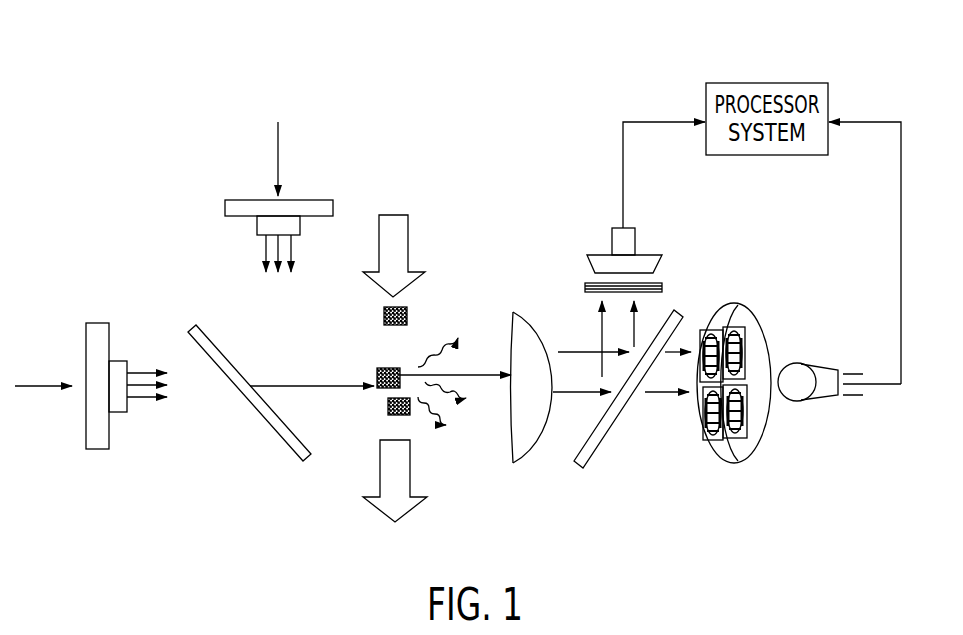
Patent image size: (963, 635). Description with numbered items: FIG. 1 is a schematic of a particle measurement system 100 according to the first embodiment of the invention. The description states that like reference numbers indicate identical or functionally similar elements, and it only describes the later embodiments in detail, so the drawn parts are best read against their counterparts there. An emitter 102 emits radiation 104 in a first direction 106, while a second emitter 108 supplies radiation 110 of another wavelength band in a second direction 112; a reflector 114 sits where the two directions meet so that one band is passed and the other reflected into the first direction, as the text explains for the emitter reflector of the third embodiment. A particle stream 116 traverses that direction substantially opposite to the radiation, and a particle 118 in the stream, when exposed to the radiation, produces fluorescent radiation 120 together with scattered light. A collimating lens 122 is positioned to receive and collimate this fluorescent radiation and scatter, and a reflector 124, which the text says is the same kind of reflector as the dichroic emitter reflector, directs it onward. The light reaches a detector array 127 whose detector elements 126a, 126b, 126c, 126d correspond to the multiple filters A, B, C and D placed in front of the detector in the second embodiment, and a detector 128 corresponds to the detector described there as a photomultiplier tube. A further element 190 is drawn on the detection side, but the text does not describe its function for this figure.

The optical system 100 is at (416, 90).
The light source 102 is at (98, 451).
The light beams 104 is at (143, 401).
The input signal 106 is at (72, 392).
The sample delivery device 108 is at (248, 206).
The sample stream 110 is at (265, 248).
The sample input 112 is at (273, 135).
The mirror 114 is at (307, 459).
The sheath flow 116 is at (394, 213).
The particles 118 is at (408, 311).
The scattered light 120 is at (459, 373).
The collection lens 122 is at (525, 442).
The reflector 124 is at (593, 468).
The detector element 126a is at (734, 328).
The detector element 126b is at (712, 331).
The detector element 126c is at (737, 439).
The detector element 126d is at (709, 441).
The detector array 127 is at (757, 428).
The optical fiber coupler 128 is at (822, 360).
The detector 190 is at (598, 255).